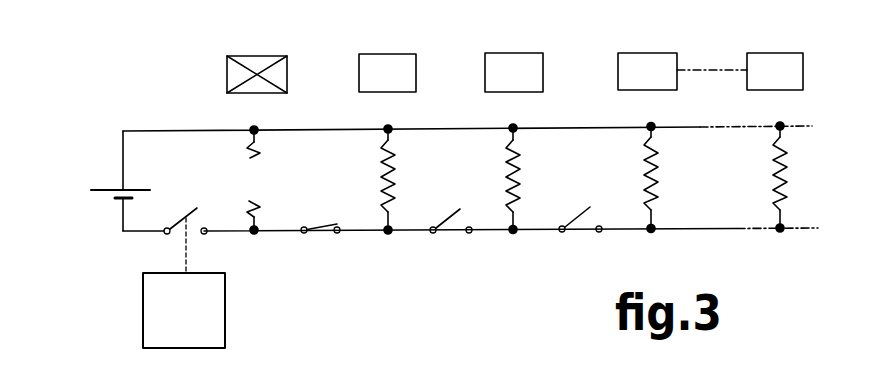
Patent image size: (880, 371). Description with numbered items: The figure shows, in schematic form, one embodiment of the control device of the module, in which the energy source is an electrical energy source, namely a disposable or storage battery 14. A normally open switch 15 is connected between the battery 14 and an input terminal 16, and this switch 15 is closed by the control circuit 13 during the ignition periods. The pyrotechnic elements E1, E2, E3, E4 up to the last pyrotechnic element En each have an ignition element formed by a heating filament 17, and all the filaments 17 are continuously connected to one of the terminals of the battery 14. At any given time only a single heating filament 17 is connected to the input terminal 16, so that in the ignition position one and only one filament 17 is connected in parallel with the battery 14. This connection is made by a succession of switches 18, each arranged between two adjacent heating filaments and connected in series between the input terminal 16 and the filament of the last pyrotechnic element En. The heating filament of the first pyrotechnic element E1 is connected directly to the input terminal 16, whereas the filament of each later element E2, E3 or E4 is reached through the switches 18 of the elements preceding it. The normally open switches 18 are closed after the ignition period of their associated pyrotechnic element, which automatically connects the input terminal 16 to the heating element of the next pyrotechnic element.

The control circuit 13 is at (198, 318).
The battery 14 is at (110, 188).
The normally open switch 15 is at (185, 210).
The input terminal 16 is at (258, 233).
The heating filament 17 is at (505, 182).
The switches 18 is at (578, 233).
The first pyrotechnic element E1 is at (262, 62).
The pyrotechnic element E2 is at (397, 66).
The pyrotechnic element E3 is at (520, 68).
The pyrotechnic element E4 is at (651, 68).
The last pyrotechnic element En is at (773, 62).